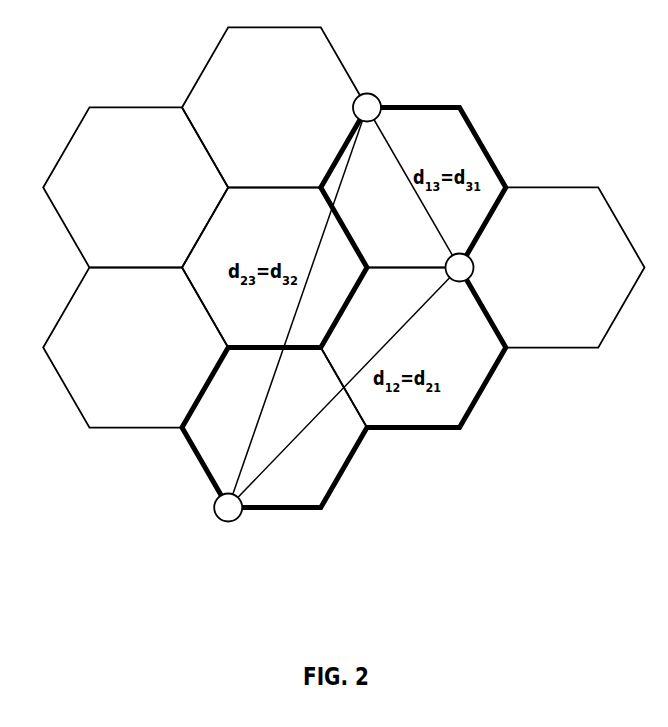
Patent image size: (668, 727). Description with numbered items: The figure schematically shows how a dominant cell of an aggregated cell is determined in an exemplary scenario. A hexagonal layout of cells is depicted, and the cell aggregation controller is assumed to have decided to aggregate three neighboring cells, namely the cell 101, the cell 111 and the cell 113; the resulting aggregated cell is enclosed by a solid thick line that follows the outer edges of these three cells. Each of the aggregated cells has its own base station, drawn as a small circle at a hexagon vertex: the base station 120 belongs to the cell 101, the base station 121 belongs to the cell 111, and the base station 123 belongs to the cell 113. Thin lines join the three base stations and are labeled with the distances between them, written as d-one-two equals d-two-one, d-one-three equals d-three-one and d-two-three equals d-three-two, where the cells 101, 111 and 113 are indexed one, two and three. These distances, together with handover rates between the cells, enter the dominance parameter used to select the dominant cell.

The cell 101 is at (478, 400).
The cell 111 is at (343, 478).
The cell 113 is at (485, 146).
The base station 120 is at (473, 270).
The base station 121 is at (214, 514).
The base station 123 is at (381, 99).